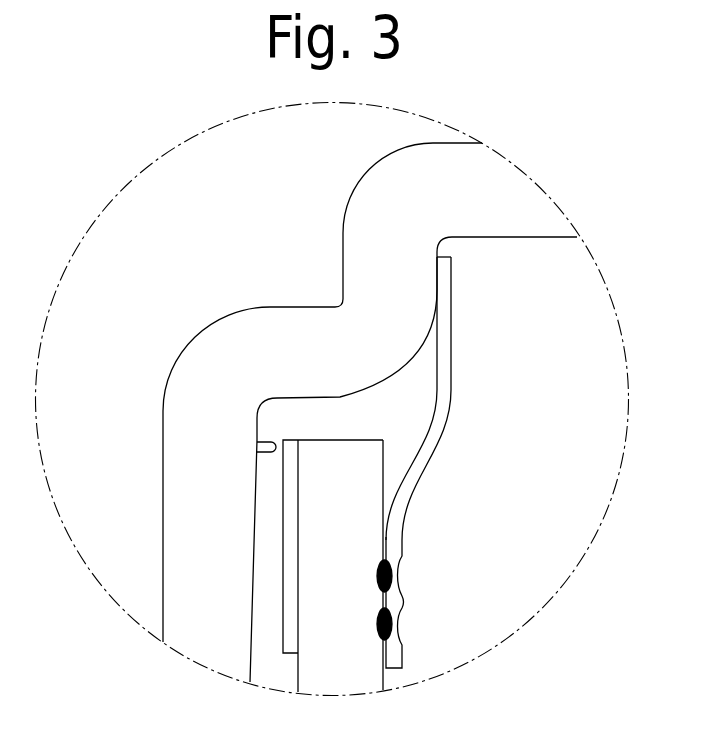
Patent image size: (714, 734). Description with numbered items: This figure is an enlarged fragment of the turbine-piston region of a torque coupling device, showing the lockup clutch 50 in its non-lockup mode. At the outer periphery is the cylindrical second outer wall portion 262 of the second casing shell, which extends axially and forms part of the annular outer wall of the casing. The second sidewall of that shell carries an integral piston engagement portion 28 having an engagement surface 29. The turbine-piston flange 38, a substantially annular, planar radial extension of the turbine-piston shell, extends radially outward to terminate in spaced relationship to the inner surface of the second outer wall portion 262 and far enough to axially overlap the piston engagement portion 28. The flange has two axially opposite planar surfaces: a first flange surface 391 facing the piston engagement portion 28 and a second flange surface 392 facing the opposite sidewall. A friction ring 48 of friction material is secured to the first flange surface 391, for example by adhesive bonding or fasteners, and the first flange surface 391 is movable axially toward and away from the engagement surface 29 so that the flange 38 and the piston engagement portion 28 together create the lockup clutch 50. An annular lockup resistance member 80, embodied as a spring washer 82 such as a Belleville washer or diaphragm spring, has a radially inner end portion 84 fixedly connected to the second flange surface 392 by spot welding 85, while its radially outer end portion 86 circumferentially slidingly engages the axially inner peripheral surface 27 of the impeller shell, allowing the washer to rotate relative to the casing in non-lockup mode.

The second outer wall portion 262 is at (473, 190).
The axially inner peripheral surface 27 is at (437, 280).
The piston engagement portion 28 is at (198, 588).
The engagement surface 29 is at (265, 458).
The turbine-piston flange 38 is at (397, 565).
The first flange surface 391 is at (297, 492).
The second flange surface 392 is at (383, 476).
The friction ring 48 is at (290, 547).
The lockup clutch 50 is at (432, 553).
The lockup resistance member 80 is at (452, 398).
The spring washer 82 is at (443, 368).
The radially inner end portion 84 is at (402, 600).
The spot welding 85 is at (378, 577).
The radially outer end portion 86 is at (443, 318).